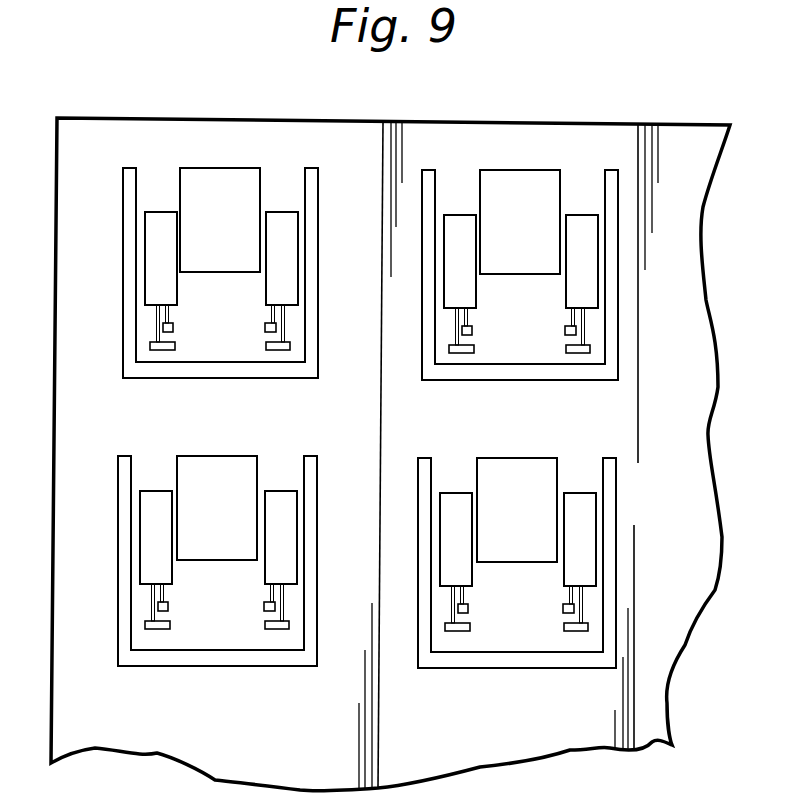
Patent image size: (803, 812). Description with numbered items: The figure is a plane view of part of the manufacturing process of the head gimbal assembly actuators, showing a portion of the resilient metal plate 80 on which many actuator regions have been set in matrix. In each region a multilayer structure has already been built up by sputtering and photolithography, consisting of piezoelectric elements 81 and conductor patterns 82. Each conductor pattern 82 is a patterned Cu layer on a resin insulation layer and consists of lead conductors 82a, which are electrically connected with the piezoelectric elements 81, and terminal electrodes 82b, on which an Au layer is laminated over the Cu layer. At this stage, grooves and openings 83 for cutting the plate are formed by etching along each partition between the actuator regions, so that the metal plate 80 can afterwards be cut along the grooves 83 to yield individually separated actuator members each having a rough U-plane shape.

The metal plate 80 is at (672, 143).
The piezoelectric element 81 is at (277, 222).
The conductor pattern 82 is at (113, 383).
The lead conductor 82a is at (152, 327).
The terminal electrode 82b is at (170, 320).
The grooves and openings 83 is at (213, 170).